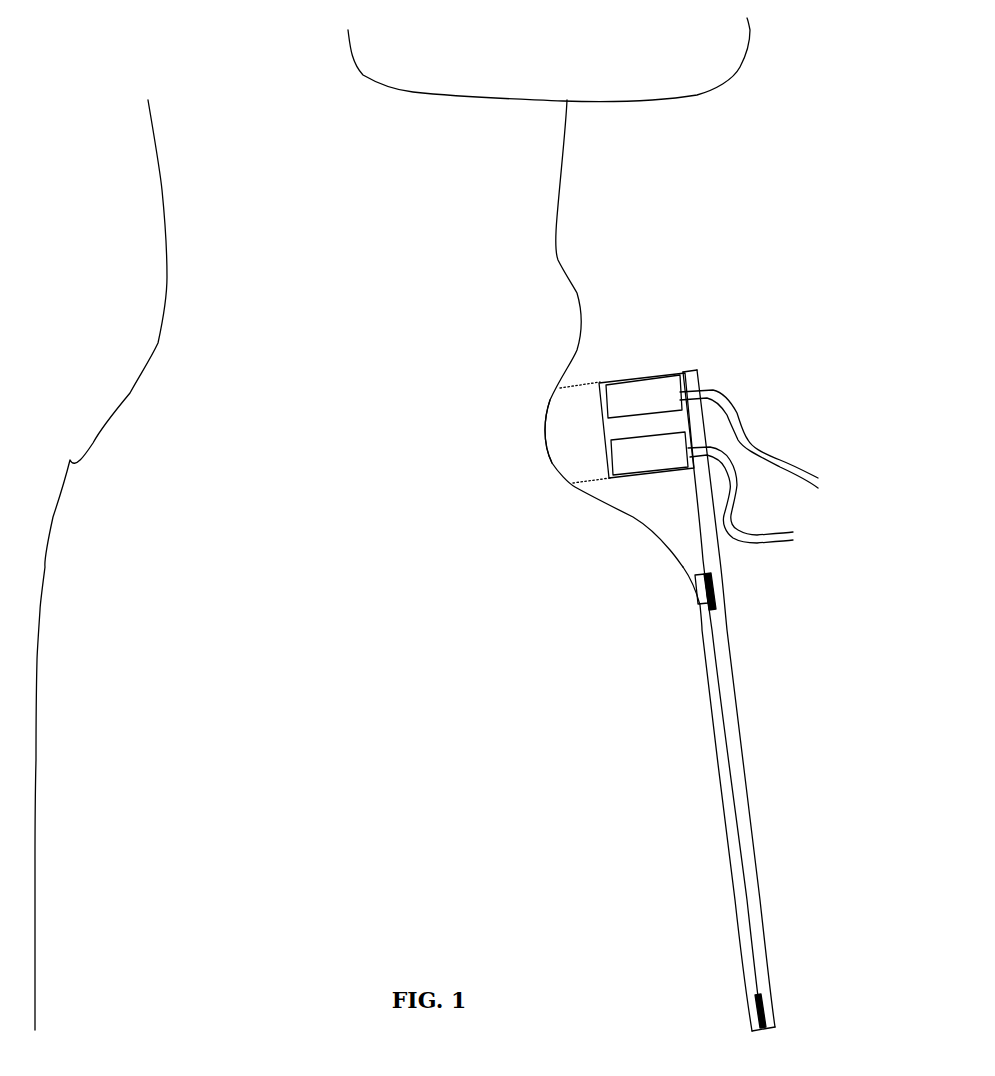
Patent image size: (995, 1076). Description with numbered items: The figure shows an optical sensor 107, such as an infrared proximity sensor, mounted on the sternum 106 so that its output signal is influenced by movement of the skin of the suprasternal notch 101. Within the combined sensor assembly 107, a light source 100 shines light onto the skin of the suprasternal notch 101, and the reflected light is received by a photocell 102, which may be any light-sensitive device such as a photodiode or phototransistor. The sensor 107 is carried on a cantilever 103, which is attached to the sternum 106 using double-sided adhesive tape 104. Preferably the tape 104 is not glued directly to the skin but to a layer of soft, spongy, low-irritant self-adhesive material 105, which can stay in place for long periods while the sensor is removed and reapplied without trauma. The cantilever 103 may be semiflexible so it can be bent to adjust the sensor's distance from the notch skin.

The light source 100 is at (644, 396).
The skin of the suprasternal notch 101 is at (622, 400).
The photocell 102 is at (649, 453).
The cantilever 103 is at (735, 672).
The double-sided adhesive tape 104 is at (767, 1007).
The self-adhesive material 105 is at (730, 857).
The sternum 106 is at (671, 665).
The optical sensor 107 is at (680, 367).